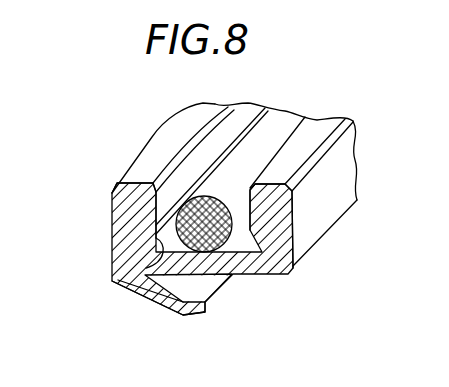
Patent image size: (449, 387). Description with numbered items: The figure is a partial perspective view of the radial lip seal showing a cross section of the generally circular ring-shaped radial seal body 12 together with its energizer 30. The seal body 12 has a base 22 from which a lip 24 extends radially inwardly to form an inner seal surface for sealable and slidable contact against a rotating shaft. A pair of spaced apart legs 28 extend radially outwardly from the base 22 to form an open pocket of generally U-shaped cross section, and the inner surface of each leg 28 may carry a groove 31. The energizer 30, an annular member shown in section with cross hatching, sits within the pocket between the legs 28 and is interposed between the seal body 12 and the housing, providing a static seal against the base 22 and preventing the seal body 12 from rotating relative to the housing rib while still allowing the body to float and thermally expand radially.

The radial seal body 12 is at (146, 133).
The energizer 30 is at (280, 132).
The legs 28 is at (111, 222).
The grooves 31 is at (146, 268).
The base 22 is at (242, 248).
The lip 24 is at (190, 316).